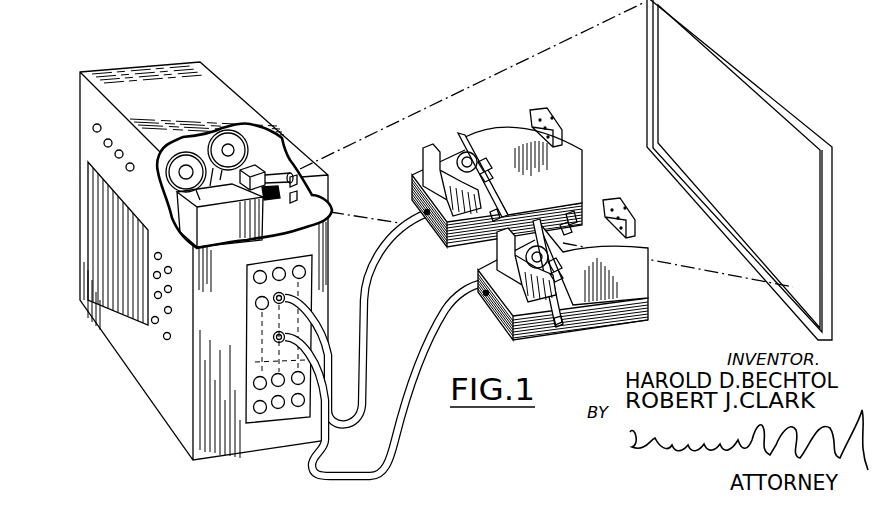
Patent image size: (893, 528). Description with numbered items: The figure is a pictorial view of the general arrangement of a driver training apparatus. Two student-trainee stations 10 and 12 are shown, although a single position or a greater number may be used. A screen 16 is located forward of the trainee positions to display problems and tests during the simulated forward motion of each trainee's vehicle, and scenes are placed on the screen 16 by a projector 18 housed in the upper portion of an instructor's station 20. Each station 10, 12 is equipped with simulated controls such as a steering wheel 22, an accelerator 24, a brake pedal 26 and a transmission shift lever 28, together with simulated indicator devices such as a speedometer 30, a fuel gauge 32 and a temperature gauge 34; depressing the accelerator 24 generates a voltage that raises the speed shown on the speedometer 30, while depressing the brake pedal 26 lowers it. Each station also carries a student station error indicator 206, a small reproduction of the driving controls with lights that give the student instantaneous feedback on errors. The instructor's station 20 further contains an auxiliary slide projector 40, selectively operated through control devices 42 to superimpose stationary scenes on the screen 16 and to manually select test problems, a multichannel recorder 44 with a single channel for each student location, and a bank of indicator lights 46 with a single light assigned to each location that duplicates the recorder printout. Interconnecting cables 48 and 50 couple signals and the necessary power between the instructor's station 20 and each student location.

The student-trainee station 10 is at (545, 168).
The student-trainee station 12 is at (640, 283).
The screen 16 is at (731, 137).
The projector 18 is at (190, 173).
The instructor's station 20 is at (198, 236).
The steering wheel 22 is at (462, 140).
The accelerator 24 is at (493, 215).
The brake pedal 26 is at (490, 160).
The transmission shift lever 28 is at (457, 153).
The speedometer 30 is at (480, 162).
The fuel gauge 32 is at (570, 215).
The temperature gauge 34 is at (568, 222).
The auxiliary slide projector 40 is at (252, 172).
The control devices 42 is at (156, 322).
The multichannel recorder 44 is at (128, 302).
The bank of indicator lights 46 is at (130, 163).
The interconnecting cable 48 is at (437, 330).
The interconnecting cable 50 is at (380, 262).
The student station error indicator 206 is at (550, 113).